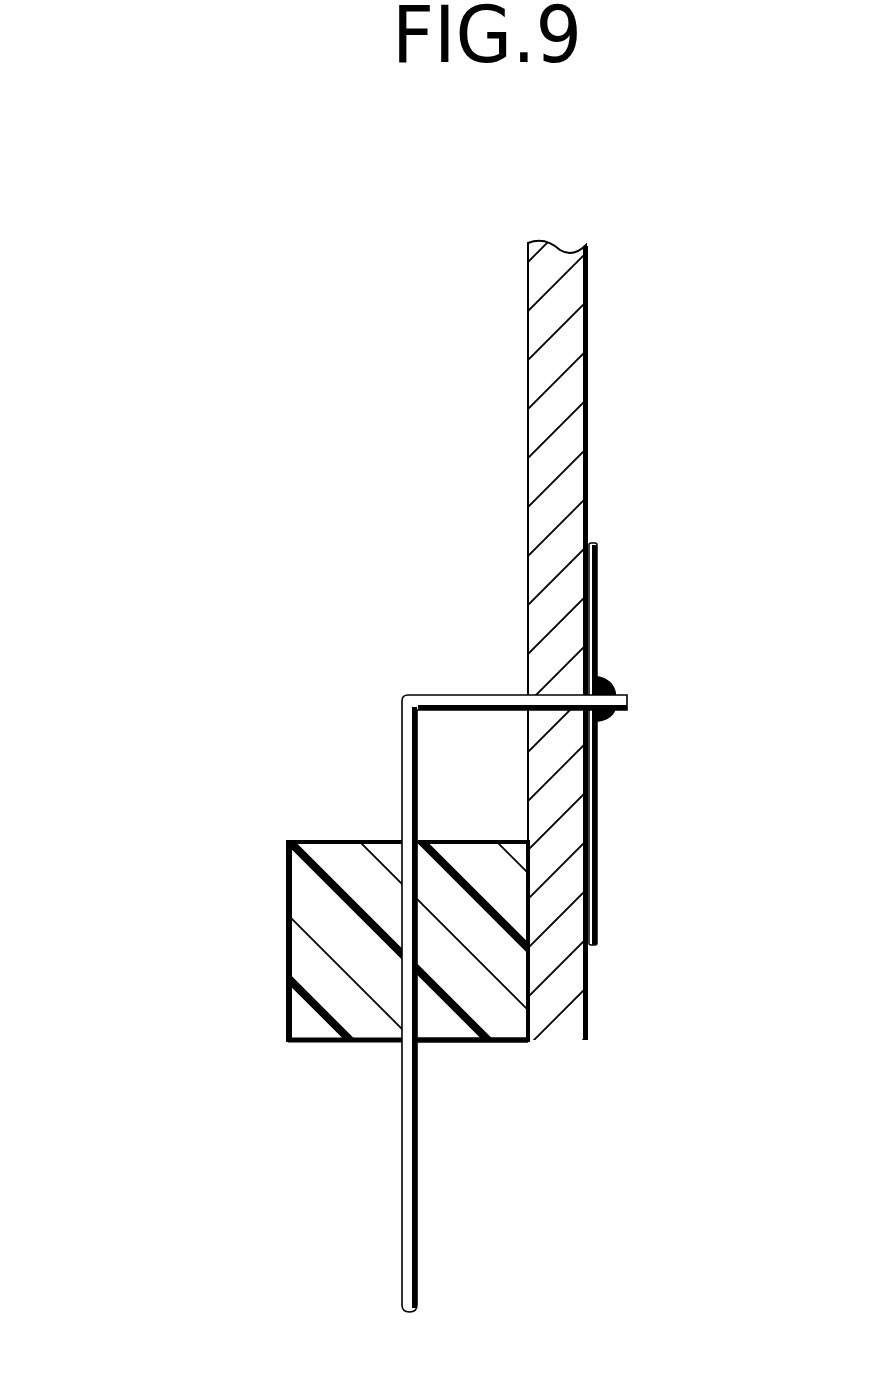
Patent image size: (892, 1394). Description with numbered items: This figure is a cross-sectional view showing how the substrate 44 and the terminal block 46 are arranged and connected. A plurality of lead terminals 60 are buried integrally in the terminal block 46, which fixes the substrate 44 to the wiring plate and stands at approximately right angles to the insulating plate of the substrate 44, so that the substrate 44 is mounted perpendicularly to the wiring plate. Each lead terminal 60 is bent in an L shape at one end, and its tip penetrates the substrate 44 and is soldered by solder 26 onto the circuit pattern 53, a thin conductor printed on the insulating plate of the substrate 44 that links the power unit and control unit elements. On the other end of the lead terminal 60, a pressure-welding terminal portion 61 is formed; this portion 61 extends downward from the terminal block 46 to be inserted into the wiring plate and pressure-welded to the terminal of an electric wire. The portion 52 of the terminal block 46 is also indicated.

The substrate 44 is at (567, 435).
The circuit pattern 53 is at (598, 595).
The solder 26 is at (603, 717).
The terminal block 46 is at (280, 929).
The connection portion 52 is at (475, 1043).
The lead terminal 60 is at (431, 685).
The pressure-welding terminal portion 61 is at (418, 1247).